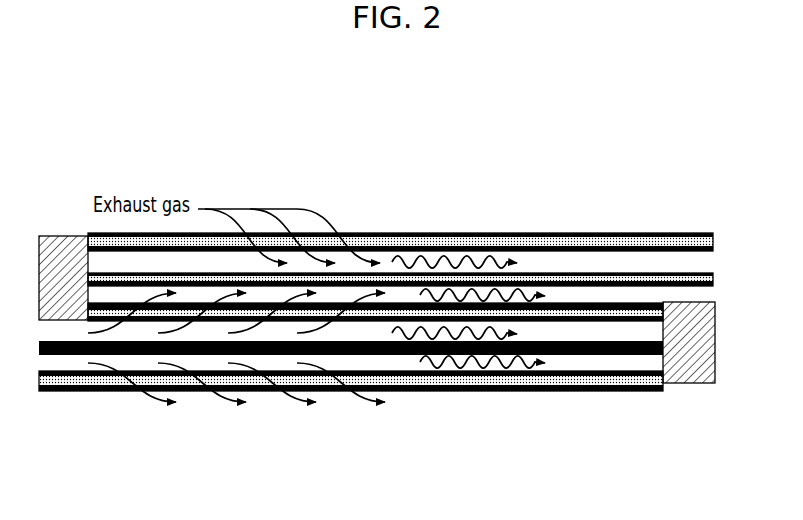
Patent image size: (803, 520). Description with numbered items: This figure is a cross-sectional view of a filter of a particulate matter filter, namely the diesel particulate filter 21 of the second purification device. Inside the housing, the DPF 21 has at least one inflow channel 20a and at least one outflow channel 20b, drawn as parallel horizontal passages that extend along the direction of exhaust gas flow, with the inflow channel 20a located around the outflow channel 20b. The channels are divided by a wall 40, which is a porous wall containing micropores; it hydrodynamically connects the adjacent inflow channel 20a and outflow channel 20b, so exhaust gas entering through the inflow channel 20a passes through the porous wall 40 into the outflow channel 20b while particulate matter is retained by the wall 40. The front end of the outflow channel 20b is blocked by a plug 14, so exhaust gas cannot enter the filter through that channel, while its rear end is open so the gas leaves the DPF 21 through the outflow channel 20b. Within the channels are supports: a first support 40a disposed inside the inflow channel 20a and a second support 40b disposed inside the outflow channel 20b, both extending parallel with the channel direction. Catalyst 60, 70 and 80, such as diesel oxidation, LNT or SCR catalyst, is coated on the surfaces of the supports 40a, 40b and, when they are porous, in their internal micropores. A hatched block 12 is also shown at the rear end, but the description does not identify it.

The second end block / housing plate 12 is at (690, 384).
The plug 14 is at (58, 236).
The inflow channel 20a is at (55, 363).
The outflow channel 20b is at (703, 259).
The diesel particulate filter 21 is at (443, 426).
The wall 40 is at (593, 305).
The first support 40a is at (617, 356).
The second support 40b is at (703, 283).
The catalyst 60 is at (647, 356).
The catalyst 70 is at (629, 302).
The catalyst 80 is at (647, 272).